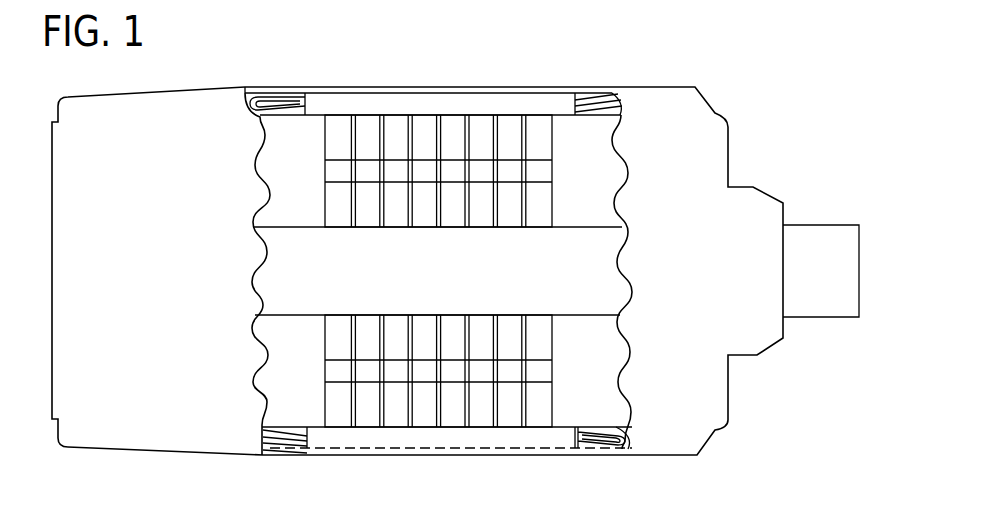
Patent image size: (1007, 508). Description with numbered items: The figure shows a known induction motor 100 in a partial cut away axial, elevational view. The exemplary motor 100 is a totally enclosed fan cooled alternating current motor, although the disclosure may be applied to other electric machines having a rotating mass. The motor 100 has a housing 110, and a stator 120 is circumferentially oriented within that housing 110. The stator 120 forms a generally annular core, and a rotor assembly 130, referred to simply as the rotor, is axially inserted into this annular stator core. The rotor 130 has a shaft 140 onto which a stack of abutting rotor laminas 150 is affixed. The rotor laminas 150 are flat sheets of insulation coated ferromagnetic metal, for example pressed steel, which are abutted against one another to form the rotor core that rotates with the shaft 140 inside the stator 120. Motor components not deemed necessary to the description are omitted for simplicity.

The induction motor 100 is at (705, 62).
The housing 110 is at (438, 277).
The stator 120 is at (492, 103).
The rotor assembly 130 is at (483, 432).
The shaft 140 is at (568, 272).
The rotor laminas 150 is at (478, 403).